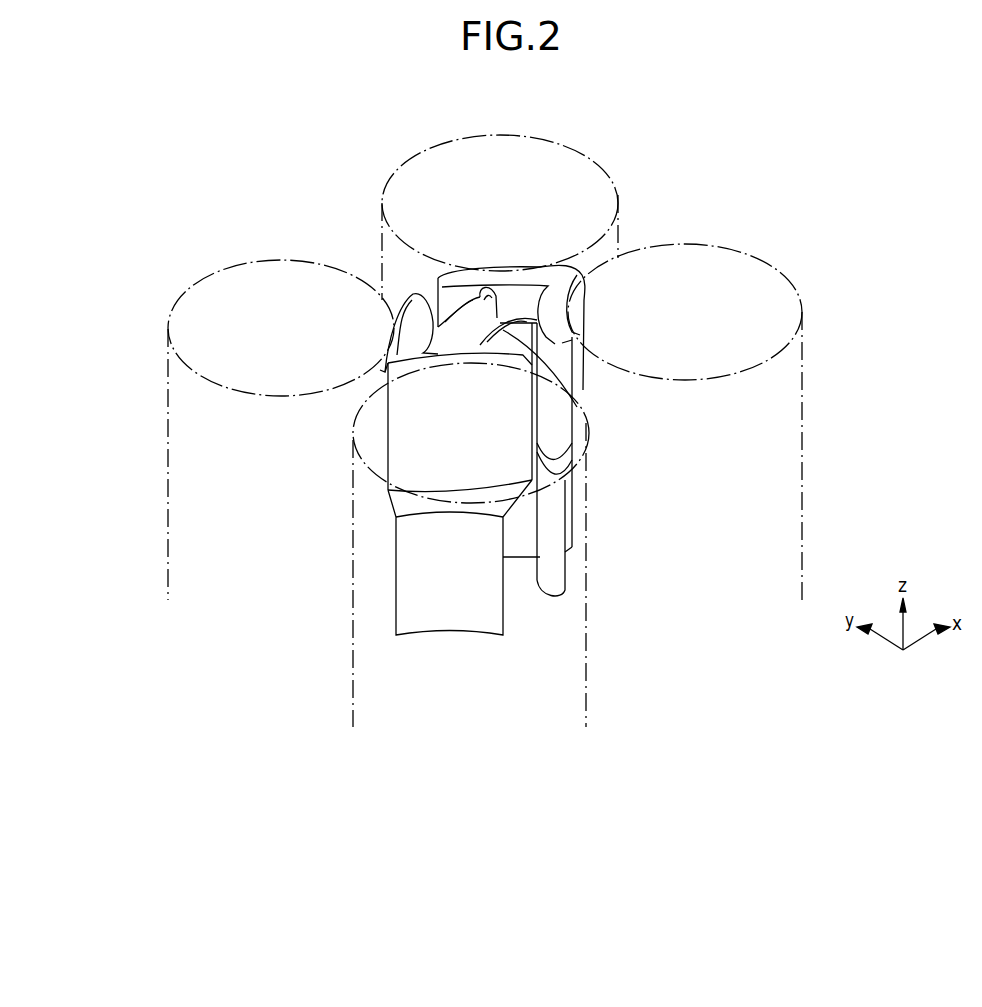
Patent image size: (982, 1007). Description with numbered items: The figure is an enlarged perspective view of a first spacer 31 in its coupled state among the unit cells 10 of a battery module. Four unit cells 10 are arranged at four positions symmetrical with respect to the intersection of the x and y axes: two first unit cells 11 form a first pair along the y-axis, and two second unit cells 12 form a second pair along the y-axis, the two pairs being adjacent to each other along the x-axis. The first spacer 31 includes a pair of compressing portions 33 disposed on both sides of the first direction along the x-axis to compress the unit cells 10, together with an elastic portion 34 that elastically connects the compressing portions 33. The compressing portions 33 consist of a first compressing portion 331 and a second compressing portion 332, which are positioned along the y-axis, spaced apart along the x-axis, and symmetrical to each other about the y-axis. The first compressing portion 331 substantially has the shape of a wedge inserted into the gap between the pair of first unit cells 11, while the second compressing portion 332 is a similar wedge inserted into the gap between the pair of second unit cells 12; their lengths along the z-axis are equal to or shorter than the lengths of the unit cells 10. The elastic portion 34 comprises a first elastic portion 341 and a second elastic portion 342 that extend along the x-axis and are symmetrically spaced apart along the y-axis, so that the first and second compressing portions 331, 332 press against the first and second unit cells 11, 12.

The unit cells 10 is at (893, 108).
The first unit cells 11 is at (282, 397).
The second unit cells 12 is at (600, 163).
The first spacer 31 is at (412, 282).
The compressing portions 33 is at (893, 178).
The first compressing portion 331 is at (441, 363).
The second compressing portion 332 is at (550, 306).
The elastic portion 34 is at (893, 250).
The first elastic portion 341 is at (470, 308).
The second elastic portion 342 is at (568, 417).